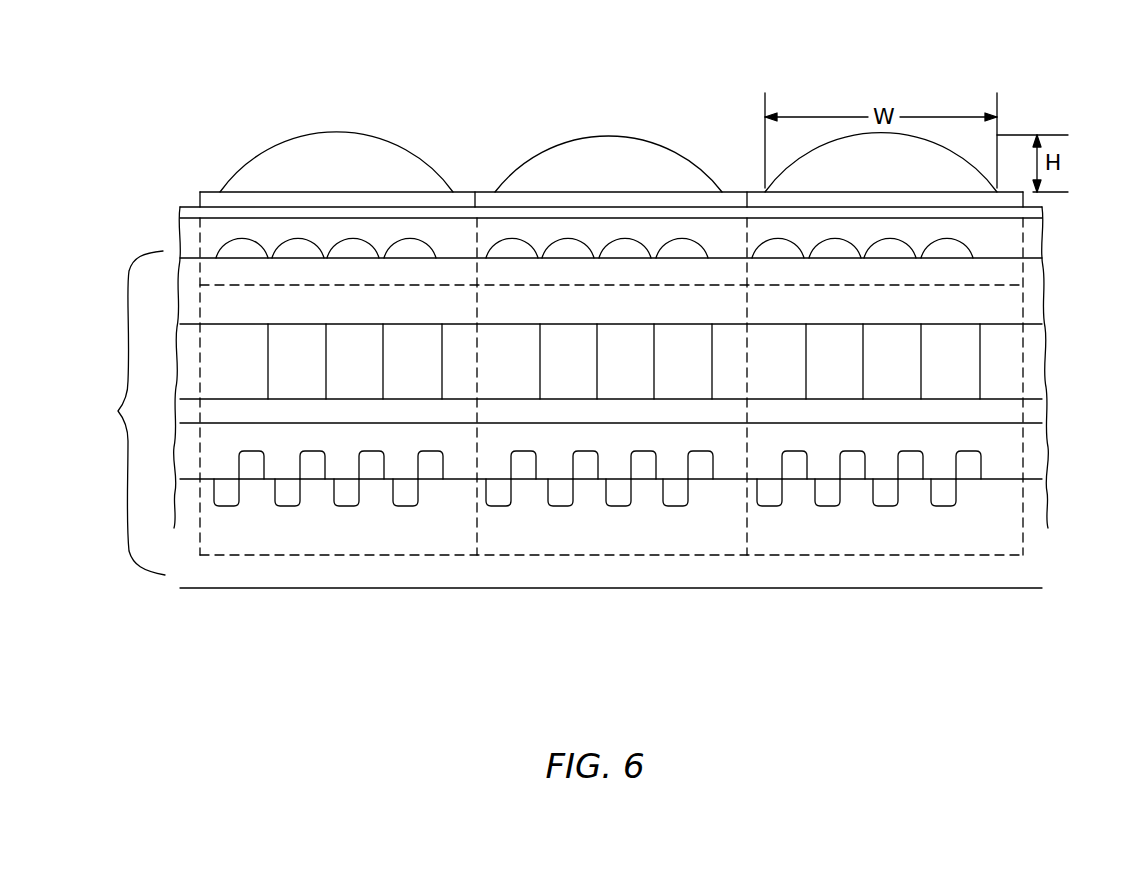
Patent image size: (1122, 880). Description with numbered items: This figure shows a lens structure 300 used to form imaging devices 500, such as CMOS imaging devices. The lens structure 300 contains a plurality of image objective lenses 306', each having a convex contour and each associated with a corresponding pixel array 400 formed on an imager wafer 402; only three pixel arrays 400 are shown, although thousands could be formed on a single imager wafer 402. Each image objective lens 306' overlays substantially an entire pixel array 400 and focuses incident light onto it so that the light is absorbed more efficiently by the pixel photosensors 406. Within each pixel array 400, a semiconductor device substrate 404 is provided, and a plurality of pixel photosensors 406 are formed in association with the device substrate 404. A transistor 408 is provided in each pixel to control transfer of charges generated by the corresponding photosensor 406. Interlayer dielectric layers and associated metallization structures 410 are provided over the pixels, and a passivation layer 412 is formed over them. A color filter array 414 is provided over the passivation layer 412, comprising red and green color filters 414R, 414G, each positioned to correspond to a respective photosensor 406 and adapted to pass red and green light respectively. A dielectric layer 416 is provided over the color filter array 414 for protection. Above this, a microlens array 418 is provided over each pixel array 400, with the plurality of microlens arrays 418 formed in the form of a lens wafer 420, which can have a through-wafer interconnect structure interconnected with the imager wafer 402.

The lens structure 300 is at (188, 193).
The image objective lens 306' is at (612, 177).
The pixel array 400 is at (320, 560).
The imager wafer 402 is at (555, 397).
The semiconductor device substrate 404 is at (1015, 538).
The pixel photosensor 406 is at (402, 499).
The transistor 408 is at (428, 460).
The interlayer dielectric layers and associated metallization structures 410 is at (1015, 455).
The passivation layer 412 is at (1010, 412).
The color filter array 414 is at (1008, 367).
The red color filter 414R is at (563, 361).
The green color filter 414G is at (624, 368).
The dielectric layer 416 is at (1017, 308).
The microlens array 418 is at (1025, 236).
The lens wafer 420 is at (178, 232).
The imaging device 500 is at (362, 122).